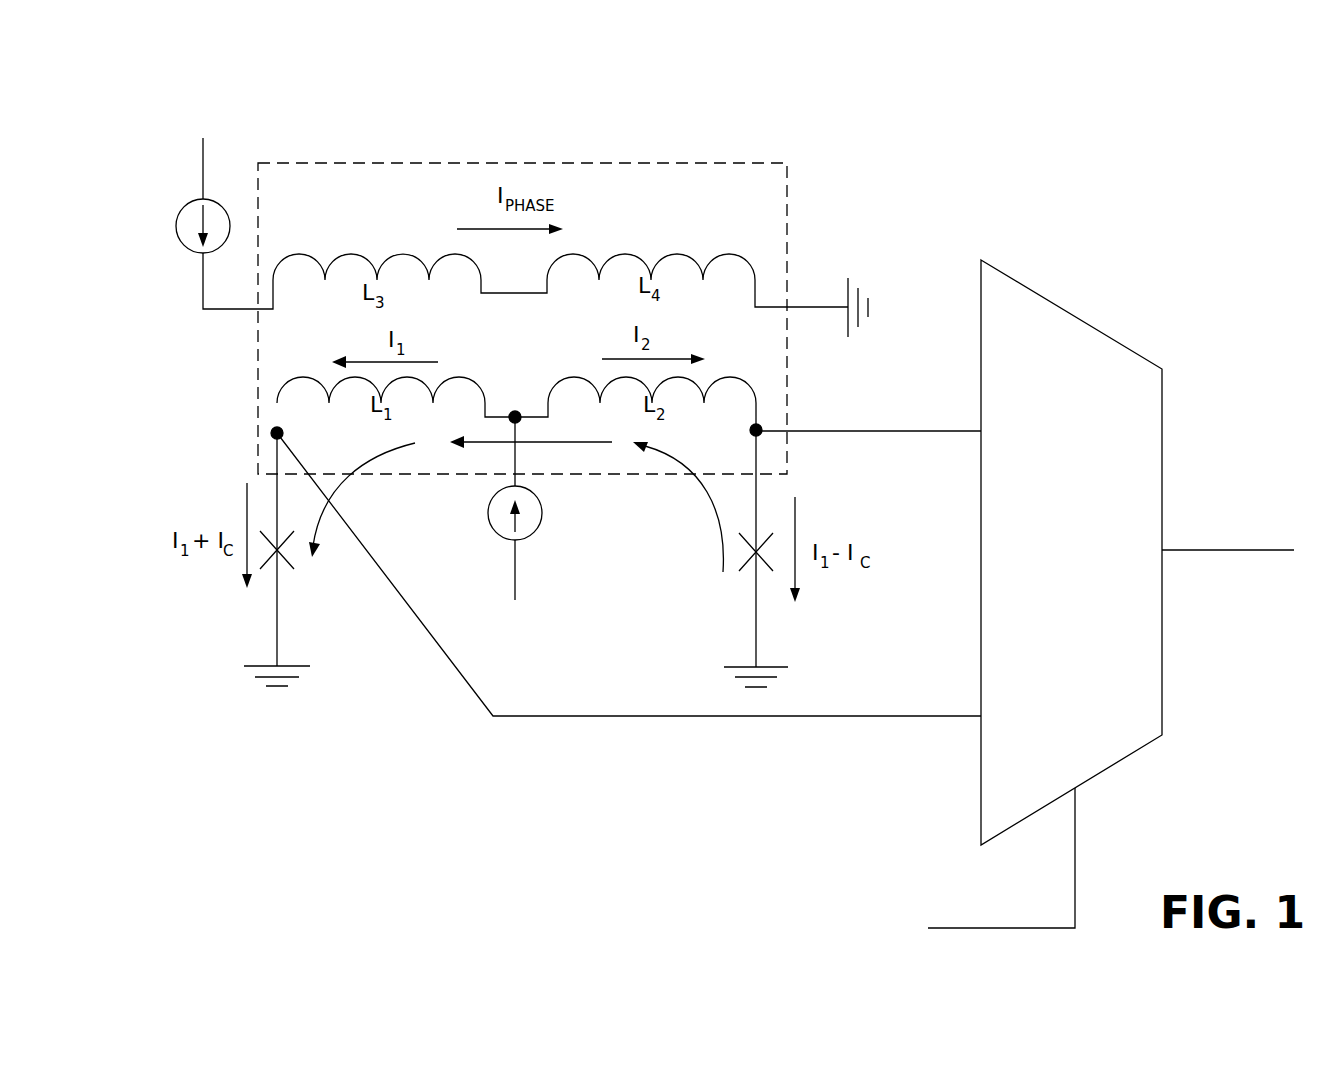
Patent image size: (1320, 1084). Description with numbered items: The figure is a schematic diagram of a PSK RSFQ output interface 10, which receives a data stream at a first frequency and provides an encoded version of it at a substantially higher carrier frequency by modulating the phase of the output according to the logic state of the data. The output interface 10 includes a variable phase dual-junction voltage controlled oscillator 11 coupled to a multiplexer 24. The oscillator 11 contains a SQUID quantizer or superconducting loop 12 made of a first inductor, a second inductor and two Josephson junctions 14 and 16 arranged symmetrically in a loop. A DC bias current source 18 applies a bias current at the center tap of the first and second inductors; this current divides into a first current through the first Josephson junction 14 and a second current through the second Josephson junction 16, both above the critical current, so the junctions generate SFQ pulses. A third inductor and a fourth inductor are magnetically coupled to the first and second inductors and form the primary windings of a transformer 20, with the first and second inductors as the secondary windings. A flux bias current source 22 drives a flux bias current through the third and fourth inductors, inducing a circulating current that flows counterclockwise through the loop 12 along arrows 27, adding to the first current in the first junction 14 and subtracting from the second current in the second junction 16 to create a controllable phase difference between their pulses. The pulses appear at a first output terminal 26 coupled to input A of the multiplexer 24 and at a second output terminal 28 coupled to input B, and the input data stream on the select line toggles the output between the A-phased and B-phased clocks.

The PSK RSFQ output interface 10 is at (1112, 147).
The variable phase dual-junction voltage controlled oscillator 11 is at (885, 168).
The SQUID quantizer or superconducting loop 12 is at (535, 632).
The first Josephson junction 14 is at (298, 578).
The second Josephson junction 16 is at (738, 585).
The DC bias current source 18 is at (548, 548).
The transformer 20 is at (741, 163).
The flux bias current source 22 is at (165, 200).
The multiplexer 24 is at (1078, 318).
The first output terminal 26 is at (261, 416).
The arrows 27 is at (498, 444).
The second output terminal 28 is at (776, 410).